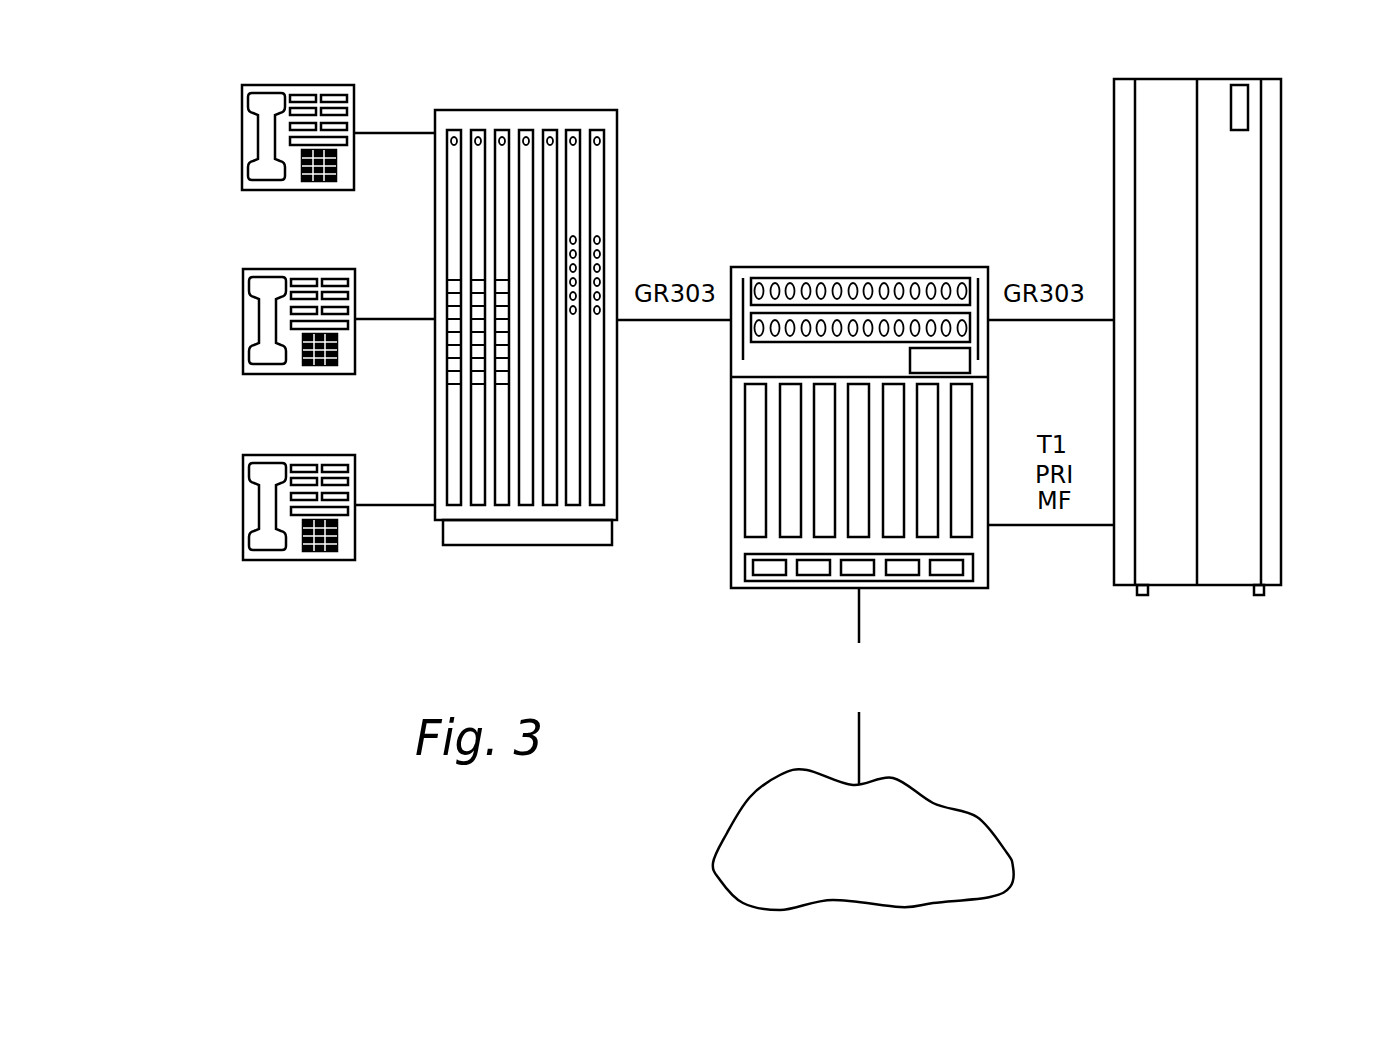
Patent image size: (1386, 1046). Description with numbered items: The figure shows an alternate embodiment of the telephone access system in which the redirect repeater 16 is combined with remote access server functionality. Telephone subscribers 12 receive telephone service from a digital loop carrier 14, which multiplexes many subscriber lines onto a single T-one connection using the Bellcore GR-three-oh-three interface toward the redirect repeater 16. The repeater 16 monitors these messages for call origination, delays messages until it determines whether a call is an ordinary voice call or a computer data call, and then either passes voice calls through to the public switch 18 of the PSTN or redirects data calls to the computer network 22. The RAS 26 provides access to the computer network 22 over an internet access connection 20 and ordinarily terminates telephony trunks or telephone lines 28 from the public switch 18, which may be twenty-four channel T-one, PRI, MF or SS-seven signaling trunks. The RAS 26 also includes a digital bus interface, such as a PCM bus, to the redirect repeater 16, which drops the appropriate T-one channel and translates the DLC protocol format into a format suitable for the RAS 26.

The telephone subscribers 12 is at (242, 168).
The digital loop carrier 14 is at (617, 138).
The redirect repeater 16 is at (872, 377).
The public switch 18 is at (1282, 527).
The internet access connection 20 is at (860, 753).
The computer network 22 is at (872, 857).
The remote access server 26 is at (731, 540).
The telephony trunks 28 is at (1058, 600).